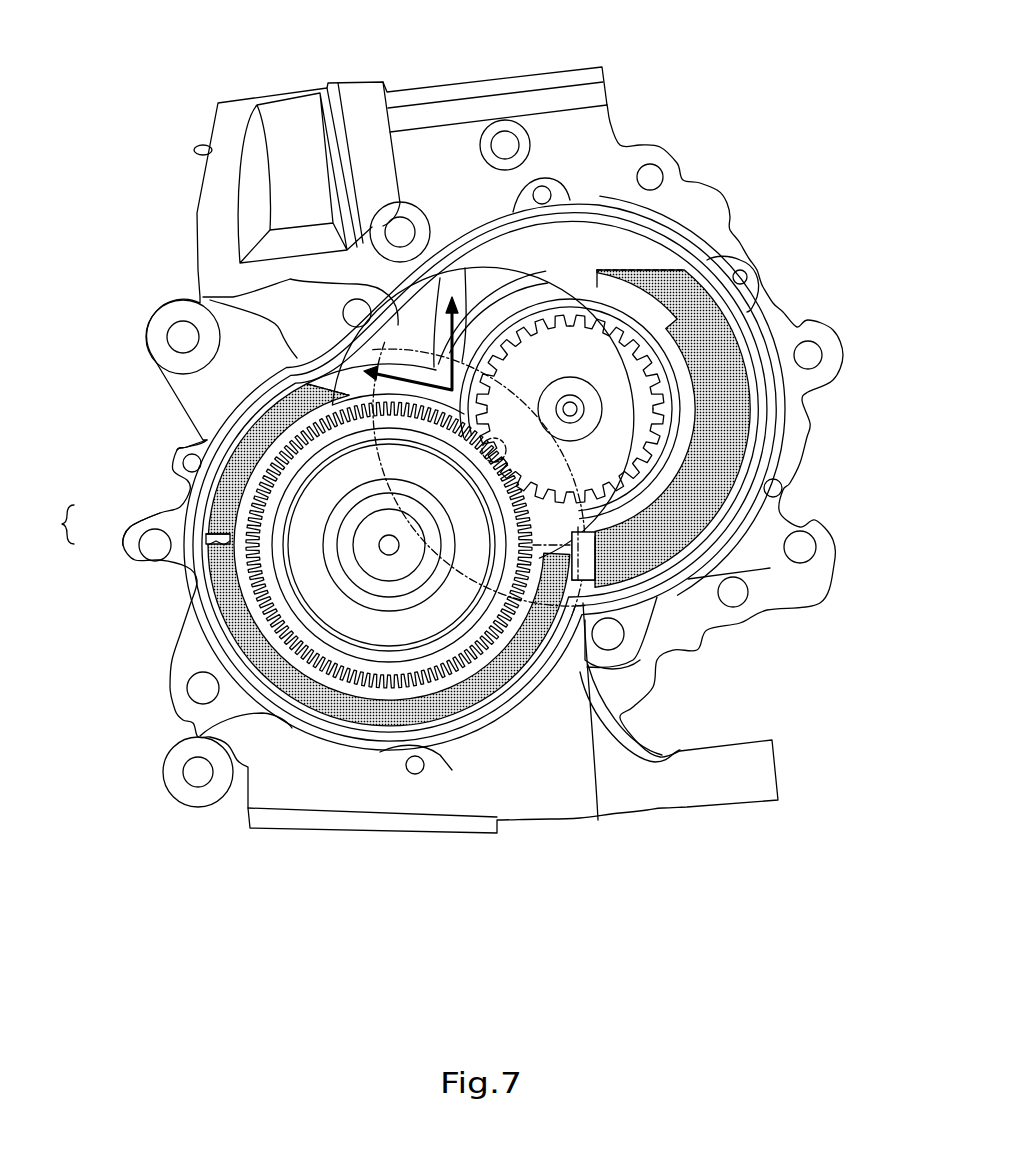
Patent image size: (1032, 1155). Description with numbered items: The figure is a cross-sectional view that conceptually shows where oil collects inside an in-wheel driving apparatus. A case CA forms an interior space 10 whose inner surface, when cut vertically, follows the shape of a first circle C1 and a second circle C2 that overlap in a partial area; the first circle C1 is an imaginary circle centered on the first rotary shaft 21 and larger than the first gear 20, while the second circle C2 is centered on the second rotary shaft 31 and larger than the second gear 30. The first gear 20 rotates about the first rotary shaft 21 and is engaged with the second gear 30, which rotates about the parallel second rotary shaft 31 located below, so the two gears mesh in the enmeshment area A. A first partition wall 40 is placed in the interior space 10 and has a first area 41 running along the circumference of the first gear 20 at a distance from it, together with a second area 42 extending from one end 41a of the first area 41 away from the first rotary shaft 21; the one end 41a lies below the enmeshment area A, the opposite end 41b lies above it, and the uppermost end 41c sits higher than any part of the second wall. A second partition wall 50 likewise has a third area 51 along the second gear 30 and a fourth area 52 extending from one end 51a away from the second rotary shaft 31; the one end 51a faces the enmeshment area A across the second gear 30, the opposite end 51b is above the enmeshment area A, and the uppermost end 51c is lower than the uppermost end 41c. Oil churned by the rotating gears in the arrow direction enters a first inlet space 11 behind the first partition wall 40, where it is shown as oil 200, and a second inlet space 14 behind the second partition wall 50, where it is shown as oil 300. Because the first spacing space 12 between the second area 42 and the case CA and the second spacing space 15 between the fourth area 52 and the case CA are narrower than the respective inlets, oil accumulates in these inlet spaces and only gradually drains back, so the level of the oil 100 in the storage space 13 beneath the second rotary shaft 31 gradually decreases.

The interior space 10 is at (480, 278).
The first inlet space 11 is at (708, 340).
The first spacing space 12 is at (580, 600).
The storage space 13 is at (360, 708).
The second inlet space 14 is at (215, 450).
The second spacing space 15 is at (205, 522).
The first gear 20 is at (615, 388).
The first rotary shaft 21 is at (590, 409).
The second gear 30 is at (413, 625).
The second rotary shaft 31 is at (385, 547).
The first partition wall 40 is at (804, 895).
The first area 41 is at (593, 533).
The one end of the first area 41a is at (588, 560).
The opposite end of the first area 41b is at (498, 297).
The uppermost end of the first area 41c is at (575, 270).
The second area 42 is at (593, 580).
The second partition wall 50 is at (55, 524).
The third area 51 is at (215, 497).
The one end of the third area 51a is at (228, 540).
The opposite end of the third area 51b is at (432, 357).
The uppermost end of the third area 51c is at (285, 400).
The fourth area 52 is at (218, 541).
The oil stored in the storage space 100 is at (312, 688).
The oil stored in the first inlet space 200 is at (733, 377).
The oil stored in the second inlet space 300 is at (368, 382).
The enmeshment area A is at (494, 450).
The first circle C1 is at (530, 615).
The second circle C2 is at (555, 360).
The case CA is at (688, 88).